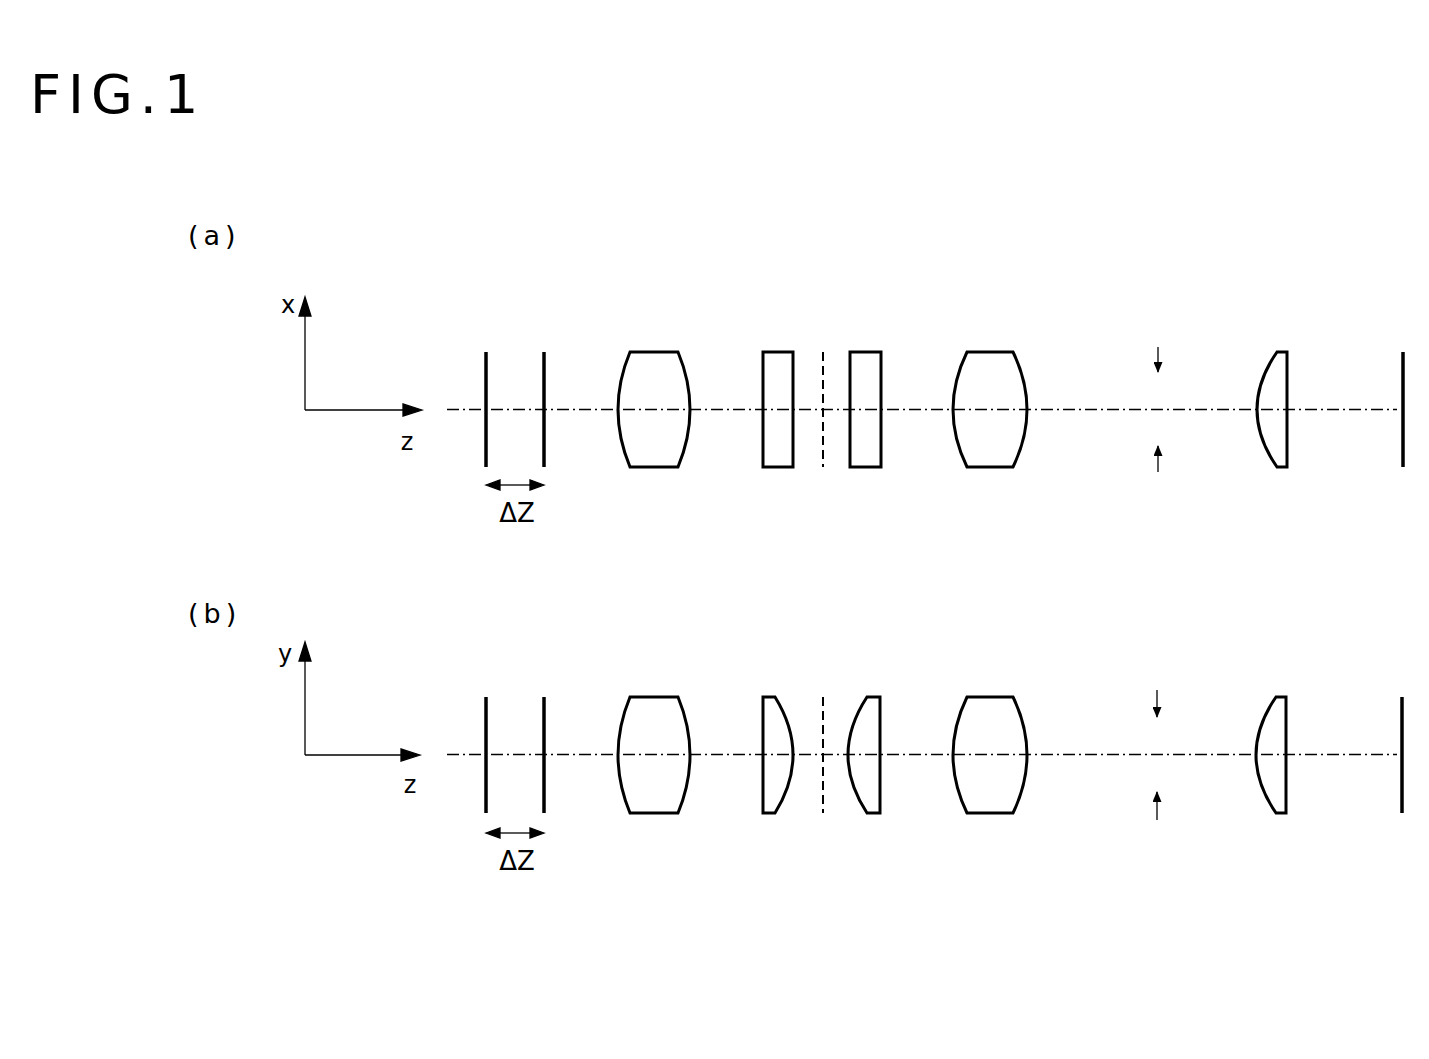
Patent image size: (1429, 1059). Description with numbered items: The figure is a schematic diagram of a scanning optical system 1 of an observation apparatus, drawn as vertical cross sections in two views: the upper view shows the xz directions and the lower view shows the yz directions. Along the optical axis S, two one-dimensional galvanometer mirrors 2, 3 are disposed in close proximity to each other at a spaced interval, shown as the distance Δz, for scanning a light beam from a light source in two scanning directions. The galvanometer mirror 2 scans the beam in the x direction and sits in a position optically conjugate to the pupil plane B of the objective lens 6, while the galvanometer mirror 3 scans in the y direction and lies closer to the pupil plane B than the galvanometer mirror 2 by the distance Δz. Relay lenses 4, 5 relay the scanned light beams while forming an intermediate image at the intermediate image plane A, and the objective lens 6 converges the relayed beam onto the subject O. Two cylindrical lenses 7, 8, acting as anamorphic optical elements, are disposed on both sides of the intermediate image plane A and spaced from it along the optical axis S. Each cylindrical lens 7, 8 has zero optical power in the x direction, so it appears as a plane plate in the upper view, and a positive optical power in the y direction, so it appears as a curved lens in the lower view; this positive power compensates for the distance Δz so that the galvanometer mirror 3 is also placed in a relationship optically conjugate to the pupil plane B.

The scanning optical system 1 is at (1058, 209).
The galvanometer mirror 2 is at (486, 372).
The galvanometer mirror 3 is at (544, 372).
The relay lens 4 is at (657, 352).
The relay lens 5 is at (990, 352).
The objective lens 6 is at (1280, 352).
The cylindrical lens 7 is at (777, 352).
The cylindrical lens 8 is at (863, 352).
The optical axis S is at (575, 409).
The intermediate image plane A is at (830, 470).
The pupil plane B is at (1148, 348).
The subject O is at (1401, 370).